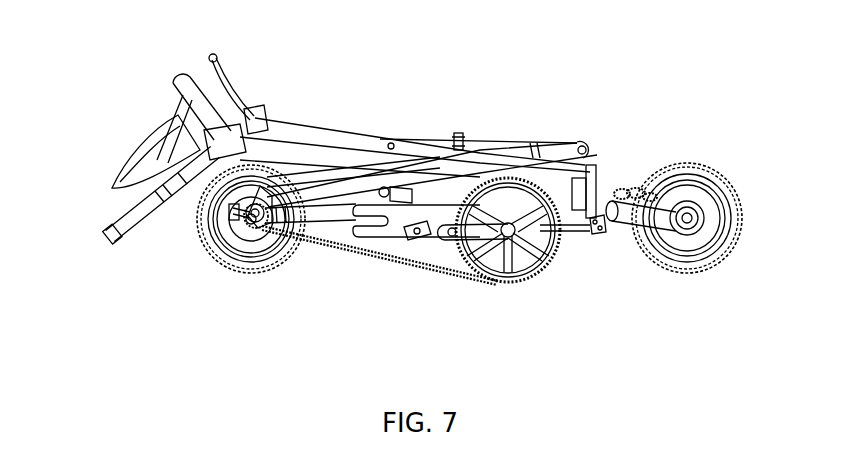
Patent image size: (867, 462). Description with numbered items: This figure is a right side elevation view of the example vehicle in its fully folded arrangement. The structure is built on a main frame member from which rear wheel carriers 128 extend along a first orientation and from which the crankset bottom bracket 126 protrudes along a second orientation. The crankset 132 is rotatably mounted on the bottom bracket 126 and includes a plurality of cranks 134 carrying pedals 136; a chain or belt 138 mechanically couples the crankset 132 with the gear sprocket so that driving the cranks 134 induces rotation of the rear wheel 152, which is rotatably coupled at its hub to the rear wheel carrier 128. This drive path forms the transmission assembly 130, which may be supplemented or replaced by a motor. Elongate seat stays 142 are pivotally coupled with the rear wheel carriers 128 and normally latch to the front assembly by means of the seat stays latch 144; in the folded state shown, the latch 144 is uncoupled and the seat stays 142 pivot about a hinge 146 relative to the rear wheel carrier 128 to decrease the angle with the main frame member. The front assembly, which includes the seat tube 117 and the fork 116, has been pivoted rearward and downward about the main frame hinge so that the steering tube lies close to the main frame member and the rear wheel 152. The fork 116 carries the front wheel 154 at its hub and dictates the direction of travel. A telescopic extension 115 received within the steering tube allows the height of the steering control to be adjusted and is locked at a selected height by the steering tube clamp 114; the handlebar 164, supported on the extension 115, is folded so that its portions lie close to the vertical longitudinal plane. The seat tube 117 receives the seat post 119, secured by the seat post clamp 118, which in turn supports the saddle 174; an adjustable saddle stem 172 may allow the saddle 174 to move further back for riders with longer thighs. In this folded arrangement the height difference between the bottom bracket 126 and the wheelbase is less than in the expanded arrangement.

The steering tube clamp 114 is at (383, 193).
The telescopic extension 115 is at (300, 148).
The fork 116 is at (642, 213).
The seat tube 117 is at (590, 165).
The seat post clamp 118 is at (463, 143).
The seat post 119 is at (390, 145).
The crankset bottom bracket 126 is at (513, 233).
The rear wheel carrier 128 is at (322, 225).
The transmission assembly 130 is at (447, 292).
The crankset 132 is at (540, 245).
The cranks 134 is at (462, 240).
The pedals 136 is at (410, 258).
The chain or belt 138 is at (370, 258).
The seat stays 142 is at (530, 147).
The seat stays latch 144 is at (580, 147).
The hinge 146 is at (263, 186).
The rear wheel 152 is at (203, 253).
The front wheel 154 is at (737, 233).
The handlebar 164 is at (115, 247).
The adjustable saddle stem 172 is at (173, 157).
The saddle 174 is at (147, 136).